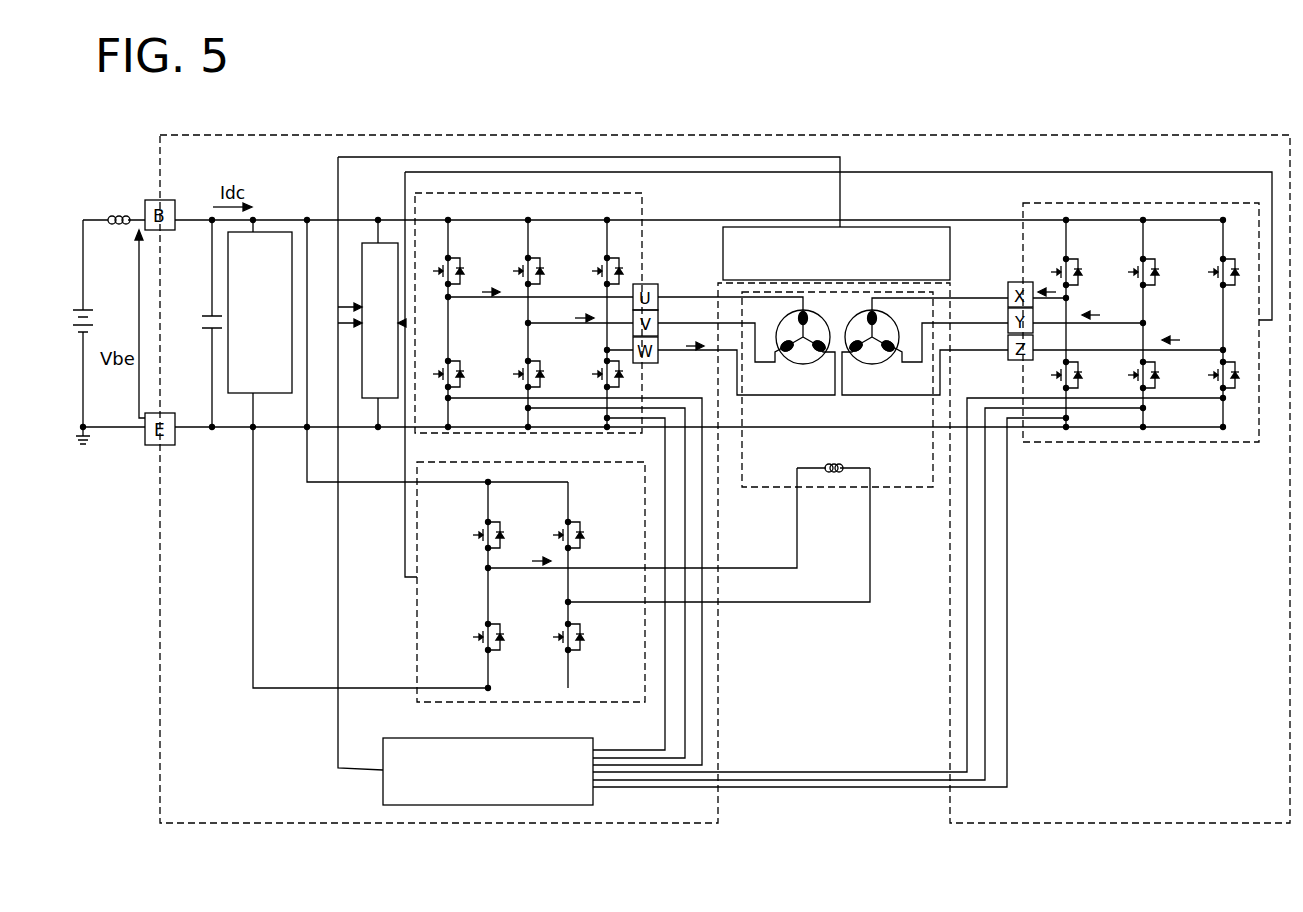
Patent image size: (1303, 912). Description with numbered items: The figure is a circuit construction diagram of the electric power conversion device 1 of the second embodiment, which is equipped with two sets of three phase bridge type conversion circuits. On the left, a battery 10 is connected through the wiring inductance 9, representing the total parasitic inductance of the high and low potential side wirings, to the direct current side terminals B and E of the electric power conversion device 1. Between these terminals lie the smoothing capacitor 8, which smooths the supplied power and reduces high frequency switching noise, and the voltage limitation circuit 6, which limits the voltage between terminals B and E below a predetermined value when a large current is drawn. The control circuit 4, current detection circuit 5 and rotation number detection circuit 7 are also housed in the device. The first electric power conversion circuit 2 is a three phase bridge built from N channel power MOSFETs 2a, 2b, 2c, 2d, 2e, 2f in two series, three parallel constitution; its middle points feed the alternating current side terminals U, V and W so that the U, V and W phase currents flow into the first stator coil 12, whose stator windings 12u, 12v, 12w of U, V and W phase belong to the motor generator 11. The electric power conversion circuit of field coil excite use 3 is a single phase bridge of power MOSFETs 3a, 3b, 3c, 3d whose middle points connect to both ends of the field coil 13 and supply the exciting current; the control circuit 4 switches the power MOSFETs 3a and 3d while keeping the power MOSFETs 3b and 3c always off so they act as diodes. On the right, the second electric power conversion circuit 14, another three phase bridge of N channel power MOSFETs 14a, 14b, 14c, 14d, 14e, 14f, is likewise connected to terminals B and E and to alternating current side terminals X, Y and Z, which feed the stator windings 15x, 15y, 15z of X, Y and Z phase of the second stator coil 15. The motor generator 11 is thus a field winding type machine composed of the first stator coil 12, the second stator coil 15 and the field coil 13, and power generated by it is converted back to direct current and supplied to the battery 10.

The electric power conversion device 1 is at (728, 134).
The first electric power conversion circuit 2 is at (559, 473).
The power MOSFET 2a is at (454, 264).
The power MOSFET 2b is at (454, 366).
The power MOSFET 2c is at (534, 264).
The power MOSFET 2d is at (534, 366).
The power MOSFET 2e is at (614, 264).
The power MOSFET 2f is at (622, 388).
The electric power conversion circuit of field coil excite use 3 is at (511, 594).
The power MOSFET 3a is at (494, 524).
The power MOSFET 3b is at (494, 624).
The power MOSFET 3c is at (572, 524).
The power MOSFET 3d is at (572, 652).
The control circuit 4 is at (362, 396).
The current detection circuit 5 is at (530, 740).
The voltage limitation circuit 6 is at (252, 393).
The rotation number detection circuit 7 is at (882, 227).
The smoothing capacitor 8 is at (208, 310).
The wiring inductance 9 is at (114, 214).
The battery 10 is at (78, 306).
The motor generator 11 is at (837, 416).
The first stator coil 12 is at (791, 348).
The stator winding of U phase 12u is at (787, 329).
The stator winding of V phase 12v is at (781, 362).
The stator winding of W phase 12w is at (820, 360).
The field coil 13 is at (838, 466).
The second electric power conversion circuit 14 is at (927, 484).
The power MOSFET 14a is at (1072, 264).
The power MOSFET 14b is at (1078, 388).
The power MOSFET 14c is at (1150, 264).
The power MOSFET 14d is at (1155, 388).
The power MOSFET 14e is at (1230, 264).
The power MOSFET 14f is at (1226, 392).
The second stator coil 15 is at (881, 348).
The stator winding of X phase 15x is at (892, 308).
The stator winding of Y phase 15y is at (890, 360).
The stator winding of Z phase 15z is at (860, 367).